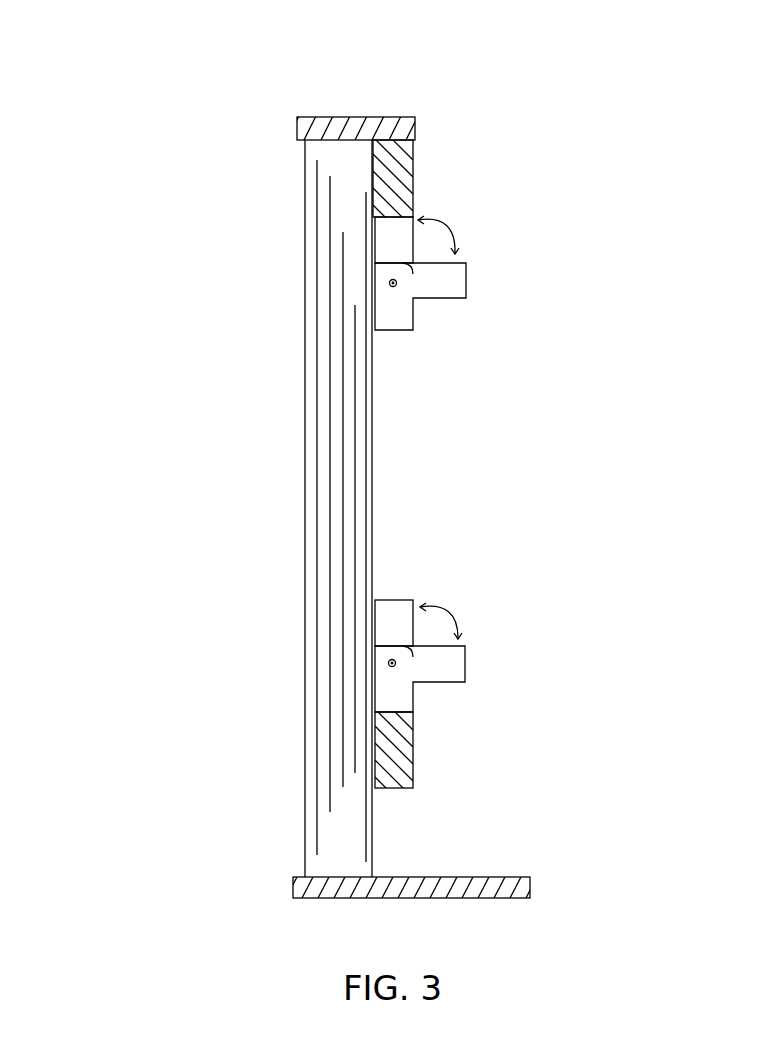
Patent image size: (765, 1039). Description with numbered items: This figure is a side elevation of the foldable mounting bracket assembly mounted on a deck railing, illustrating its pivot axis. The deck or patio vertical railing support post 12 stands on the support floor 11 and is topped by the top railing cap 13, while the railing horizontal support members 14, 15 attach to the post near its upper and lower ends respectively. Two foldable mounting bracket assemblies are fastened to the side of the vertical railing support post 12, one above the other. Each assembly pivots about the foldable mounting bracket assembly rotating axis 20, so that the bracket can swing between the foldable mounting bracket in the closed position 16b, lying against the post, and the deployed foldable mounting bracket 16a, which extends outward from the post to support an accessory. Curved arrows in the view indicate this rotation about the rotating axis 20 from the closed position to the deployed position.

The support floor 11 is at (290, 880).
The deck or patio vertical railing support post 12 is at (288, 307).
The top railing cap 13 is at (292, 112).
The railing horizontal support member 14 is at (410, 163).
The railing horizontal support member 15 is at (397, 757).
The deployed foldable mounting bracket 16a is at (463, 315).
The foldable mounting bracket in the closed position 16b is at (442, 205).
The foldable mounting bracket assembly rotating axis 20 is at (387, 278).